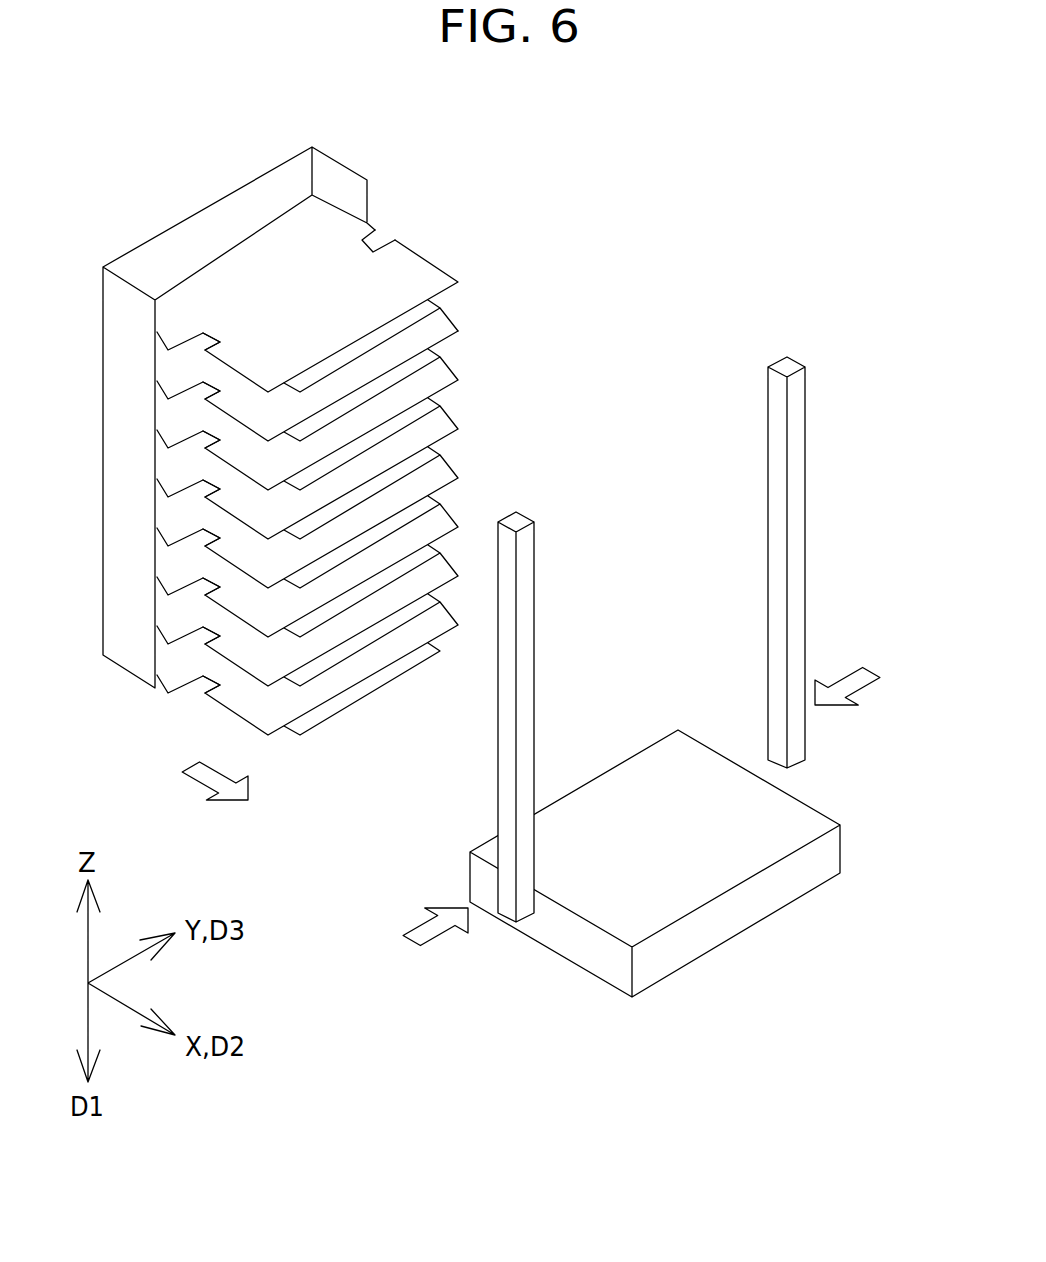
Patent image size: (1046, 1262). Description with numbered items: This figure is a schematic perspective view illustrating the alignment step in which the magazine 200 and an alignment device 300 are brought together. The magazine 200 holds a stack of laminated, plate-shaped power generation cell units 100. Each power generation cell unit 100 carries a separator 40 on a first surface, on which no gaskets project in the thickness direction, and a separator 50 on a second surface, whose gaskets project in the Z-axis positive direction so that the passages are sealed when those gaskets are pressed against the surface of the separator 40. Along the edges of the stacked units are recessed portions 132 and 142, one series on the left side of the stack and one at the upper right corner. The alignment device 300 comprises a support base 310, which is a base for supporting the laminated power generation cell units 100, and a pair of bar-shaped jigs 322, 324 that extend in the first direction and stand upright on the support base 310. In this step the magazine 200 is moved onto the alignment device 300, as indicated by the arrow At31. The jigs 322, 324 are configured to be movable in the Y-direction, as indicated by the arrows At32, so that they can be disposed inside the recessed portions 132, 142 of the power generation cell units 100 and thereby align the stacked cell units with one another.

The power generation cell unit 100 is at (298, 437).
The magazine 200 is at (195, 196).
The recessed portion 142 is at (378, 240).
The recessed portion 132 is at (192, 680).
The separator 50 is at (433, 282).
The separator 40 is at (447, 290).
The alignment device 300 is at (656, 677).
The support base 310 is at (758, 900).
The jig 322 is at (797, 502).
The jig 324 is at (507, 777).
The arrow At31 is at (198, 790).
The arrow At32 is at (445, 938).